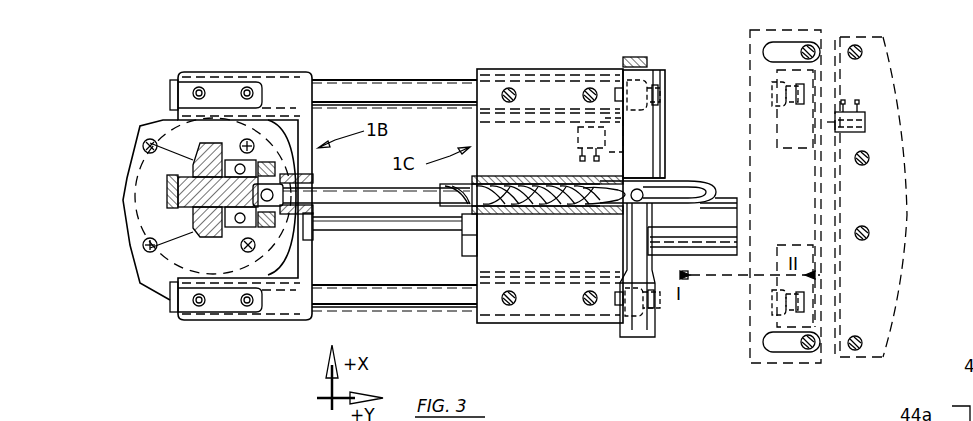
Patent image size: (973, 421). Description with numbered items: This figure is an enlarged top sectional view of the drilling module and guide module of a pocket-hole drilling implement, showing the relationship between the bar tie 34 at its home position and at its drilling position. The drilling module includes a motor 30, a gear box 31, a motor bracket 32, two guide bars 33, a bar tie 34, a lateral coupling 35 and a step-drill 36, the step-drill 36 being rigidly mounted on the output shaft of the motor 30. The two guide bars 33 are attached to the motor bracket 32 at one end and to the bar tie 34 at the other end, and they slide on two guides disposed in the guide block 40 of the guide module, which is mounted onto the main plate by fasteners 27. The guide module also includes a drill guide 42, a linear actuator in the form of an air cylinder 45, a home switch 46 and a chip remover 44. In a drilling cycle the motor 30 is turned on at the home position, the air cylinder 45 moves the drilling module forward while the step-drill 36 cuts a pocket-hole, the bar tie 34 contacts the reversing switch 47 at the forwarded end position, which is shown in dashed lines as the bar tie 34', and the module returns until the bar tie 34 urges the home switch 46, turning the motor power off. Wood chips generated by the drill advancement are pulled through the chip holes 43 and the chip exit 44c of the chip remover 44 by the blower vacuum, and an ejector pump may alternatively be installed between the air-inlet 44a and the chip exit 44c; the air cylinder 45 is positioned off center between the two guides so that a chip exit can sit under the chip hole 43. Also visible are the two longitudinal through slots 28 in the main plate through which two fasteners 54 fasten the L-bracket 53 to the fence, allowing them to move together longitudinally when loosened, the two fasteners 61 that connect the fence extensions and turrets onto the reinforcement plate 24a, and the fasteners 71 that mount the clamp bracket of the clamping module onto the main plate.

The reinforcement plate 24a is at (908, 205).
The fasteners 27 is at (513, 90).
The longitudinal through slots 28 is at (788, 52).
The motor 30 is at (225, 82).
The gear box 31 is at (200, 137).
The motor bracket 32 is at (292, 72).
The guide bars 33 is at (400, 80).
The bar tie 34 is at (662, 124).
The bar tie at forwarded end position 34' is at (759, 198).
The lateral coupling 35 is at (318, 182).
The step-drill 36 is at (445, 205).
The guide block 40 is at (483, 68).
The drill guide 42 is at (522, 215).
The chip holes 43 is at (600, 200).
The chip remover 44 is at (655, 330).
The air-inlet 44a is at (622, 60).
The chip exit 44c is at (630, 337).
The air cylinder 45 is at (718, 198).
The home switch 46 is at (575, 144).
The reversing switch 47 is at (868, 122).
The L-bracket 53 is at (748, 358).
The fasteners 54 is at (800, 54).
The fasteners 61 is at (862, 52).
The fasteners 71 is at (868, 158).